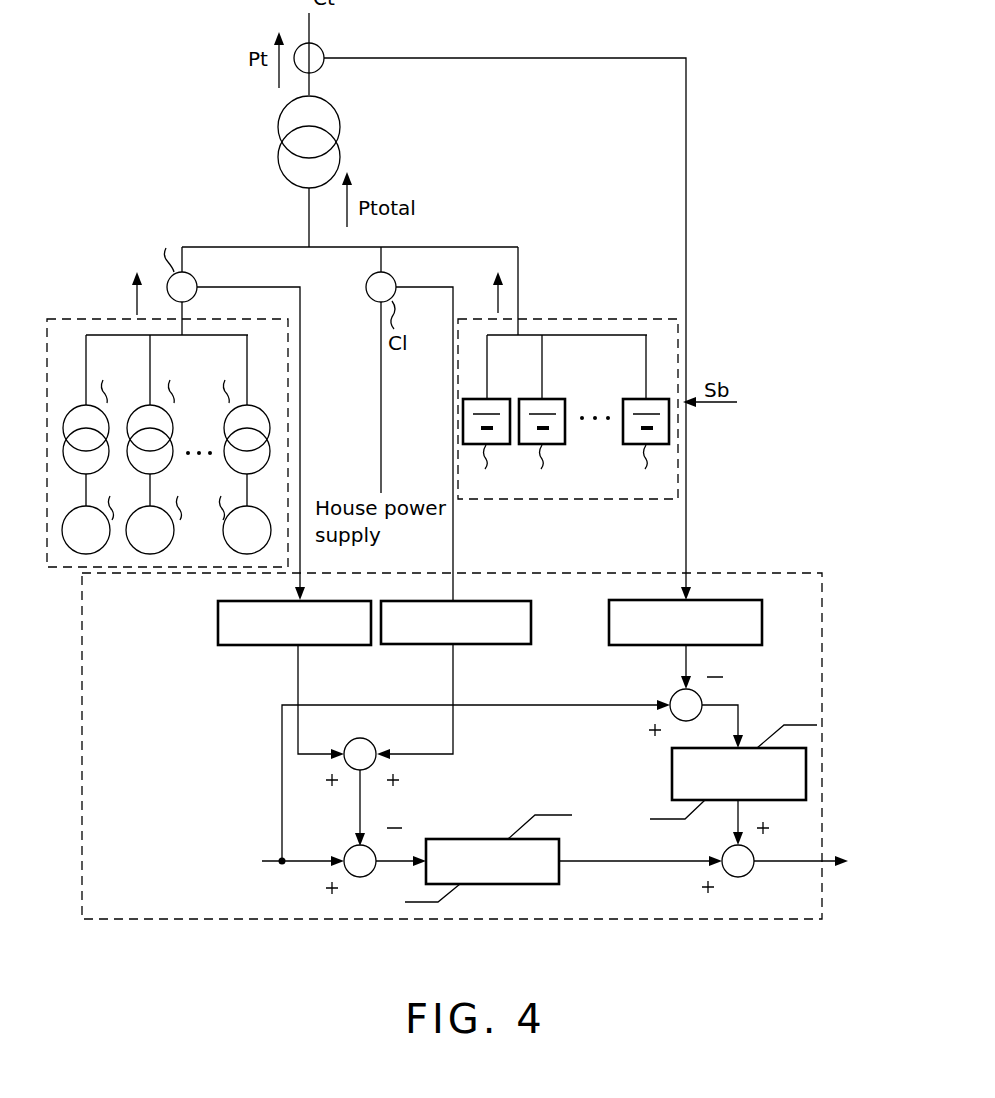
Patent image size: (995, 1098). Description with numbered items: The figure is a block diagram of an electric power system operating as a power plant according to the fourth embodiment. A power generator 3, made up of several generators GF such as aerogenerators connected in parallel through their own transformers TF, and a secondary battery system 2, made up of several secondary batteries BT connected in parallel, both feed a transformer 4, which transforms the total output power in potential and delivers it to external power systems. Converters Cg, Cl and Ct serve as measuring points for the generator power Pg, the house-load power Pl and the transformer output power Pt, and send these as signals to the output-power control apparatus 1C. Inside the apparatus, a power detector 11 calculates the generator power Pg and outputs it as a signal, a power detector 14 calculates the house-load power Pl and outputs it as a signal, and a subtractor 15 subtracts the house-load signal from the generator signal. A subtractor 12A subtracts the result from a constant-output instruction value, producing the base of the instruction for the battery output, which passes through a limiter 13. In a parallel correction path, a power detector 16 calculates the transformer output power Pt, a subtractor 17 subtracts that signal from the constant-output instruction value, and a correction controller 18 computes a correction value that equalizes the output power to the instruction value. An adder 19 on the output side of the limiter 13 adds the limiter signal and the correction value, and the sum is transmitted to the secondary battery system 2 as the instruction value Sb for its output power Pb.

The transformer 4 is at (340, 117).
The power generator 3 is at (69, 318).
The secondary battery system 2 is at (620, 318).
The output-power control apparatus 1C is at (823, 611).
The power detector 11 is at (218, 626).
The power detector 14 is at (532, 622).
The power detector 16 is at (763, 622).
The subtractor 15 is at (375, 744).
The subtractor 12A is at (346, 848).
The limiter 13 is at (466, 838).
The subtractor 17 is at (703, 697).
The correction controller 18 is at (672, 776).
The adder 19 is at (750, 873).